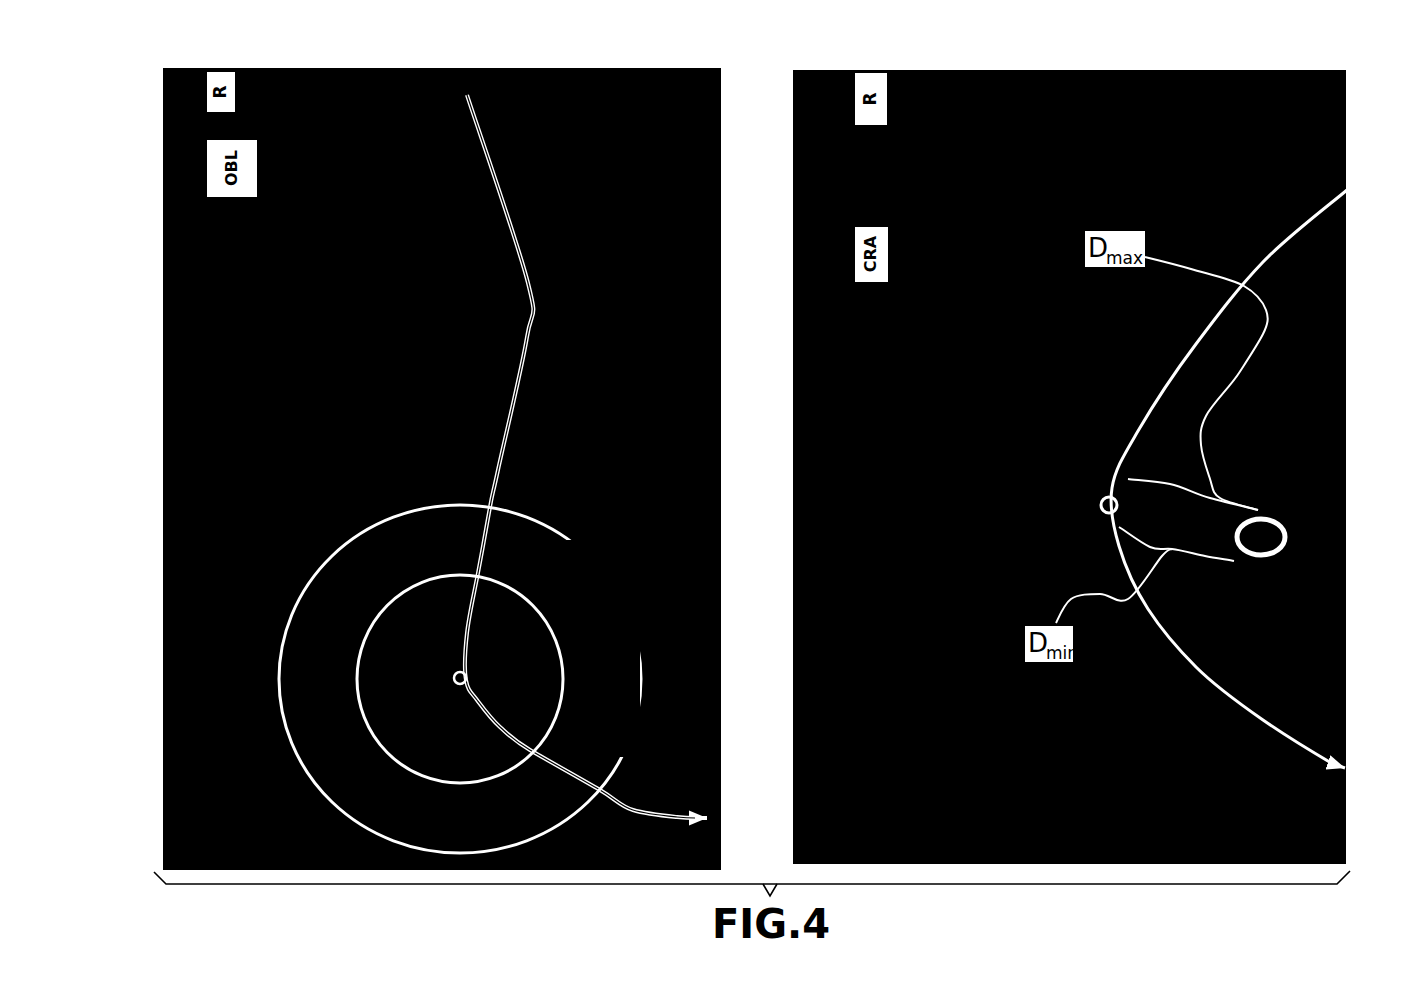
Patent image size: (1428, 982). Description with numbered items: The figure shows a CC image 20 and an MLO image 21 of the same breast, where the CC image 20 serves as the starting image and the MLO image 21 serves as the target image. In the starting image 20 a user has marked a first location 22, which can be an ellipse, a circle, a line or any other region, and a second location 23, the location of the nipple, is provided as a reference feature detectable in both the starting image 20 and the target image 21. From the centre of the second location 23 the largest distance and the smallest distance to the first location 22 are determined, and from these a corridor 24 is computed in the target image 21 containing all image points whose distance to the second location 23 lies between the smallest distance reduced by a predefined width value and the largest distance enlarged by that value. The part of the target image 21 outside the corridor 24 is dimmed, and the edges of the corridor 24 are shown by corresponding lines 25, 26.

The CC image 20 is at (1358, 100).
The MLO image 21 is at (157, 200).
The first location 22 is at (1261, 561).
The location of the nipple 23 is at (453, 673).
The corridor 24 is at (570, 603).
The line 25 is at (275, 708).
The line 26 is at (372, 628).